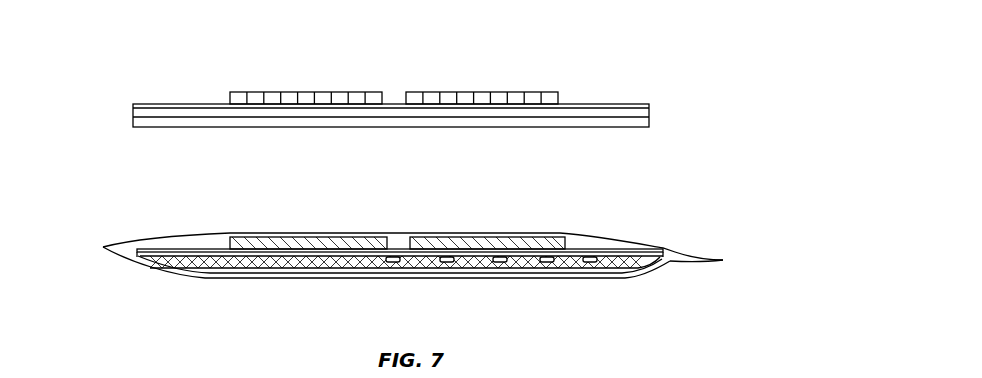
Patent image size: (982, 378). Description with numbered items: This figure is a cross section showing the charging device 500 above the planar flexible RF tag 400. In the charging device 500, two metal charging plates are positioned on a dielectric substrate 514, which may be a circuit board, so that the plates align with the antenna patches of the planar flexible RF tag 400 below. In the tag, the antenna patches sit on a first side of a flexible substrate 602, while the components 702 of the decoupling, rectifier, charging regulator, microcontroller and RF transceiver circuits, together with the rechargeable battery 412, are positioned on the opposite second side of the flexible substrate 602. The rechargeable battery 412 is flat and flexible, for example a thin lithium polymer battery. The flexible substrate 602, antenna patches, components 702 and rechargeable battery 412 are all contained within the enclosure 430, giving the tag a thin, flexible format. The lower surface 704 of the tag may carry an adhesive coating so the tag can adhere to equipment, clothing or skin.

The charging device 500 is at (735, 80).
The dielectric substrate 514 is at (137, 117).
The planar flexible RF tag 400 is at (735, 220).
The enclosure 430 is at (113, 246).
The flexible substrate 602 is at (603, 247).
The components 702 is at (553, 273).
The lower surface 704 is at (287, 290).
The rechargeable battery 412 is at (177, 270).